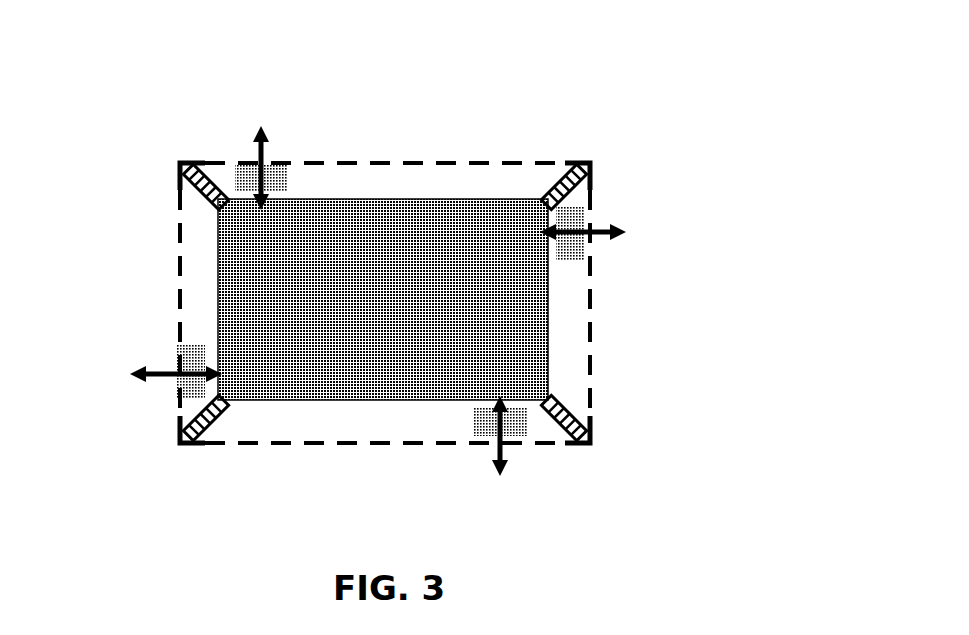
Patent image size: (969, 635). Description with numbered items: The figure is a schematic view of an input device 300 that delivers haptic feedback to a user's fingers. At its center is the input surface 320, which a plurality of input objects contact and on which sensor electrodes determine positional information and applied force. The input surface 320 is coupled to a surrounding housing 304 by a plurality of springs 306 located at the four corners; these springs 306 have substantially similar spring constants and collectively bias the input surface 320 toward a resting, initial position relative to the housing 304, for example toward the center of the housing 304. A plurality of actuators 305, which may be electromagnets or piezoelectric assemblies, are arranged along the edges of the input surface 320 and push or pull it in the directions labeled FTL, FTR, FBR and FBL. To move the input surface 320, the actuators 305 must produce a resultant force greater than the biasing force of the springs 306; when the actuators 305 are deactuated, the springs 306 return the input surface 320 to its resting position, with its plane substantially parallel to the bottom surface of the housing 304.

The input device 300 is at (514, 70).
The housing 304 is at (350, 446).
The actuators 305 is at (222, 166).
The springs 306 is at (566, 160).
The input surface 320 is at (382, 228).